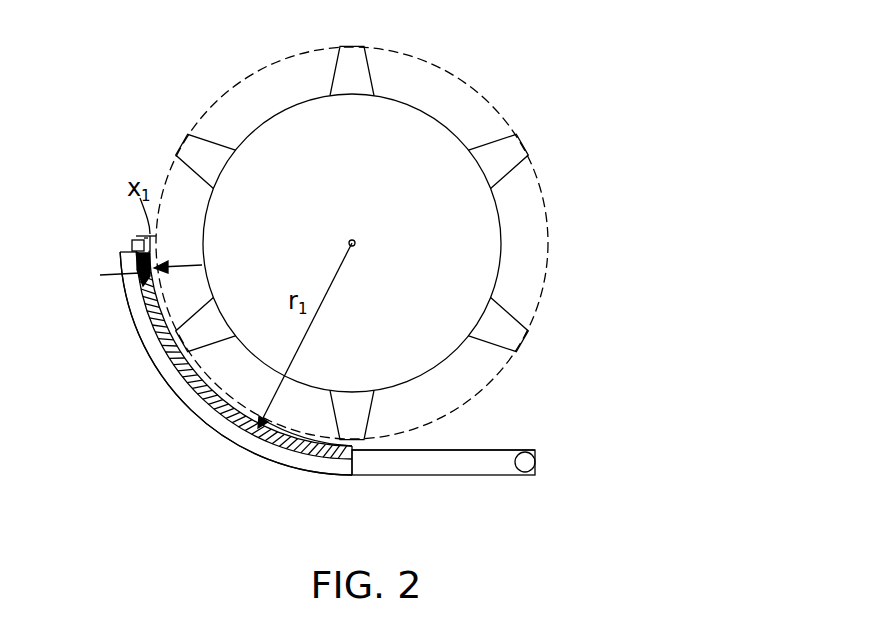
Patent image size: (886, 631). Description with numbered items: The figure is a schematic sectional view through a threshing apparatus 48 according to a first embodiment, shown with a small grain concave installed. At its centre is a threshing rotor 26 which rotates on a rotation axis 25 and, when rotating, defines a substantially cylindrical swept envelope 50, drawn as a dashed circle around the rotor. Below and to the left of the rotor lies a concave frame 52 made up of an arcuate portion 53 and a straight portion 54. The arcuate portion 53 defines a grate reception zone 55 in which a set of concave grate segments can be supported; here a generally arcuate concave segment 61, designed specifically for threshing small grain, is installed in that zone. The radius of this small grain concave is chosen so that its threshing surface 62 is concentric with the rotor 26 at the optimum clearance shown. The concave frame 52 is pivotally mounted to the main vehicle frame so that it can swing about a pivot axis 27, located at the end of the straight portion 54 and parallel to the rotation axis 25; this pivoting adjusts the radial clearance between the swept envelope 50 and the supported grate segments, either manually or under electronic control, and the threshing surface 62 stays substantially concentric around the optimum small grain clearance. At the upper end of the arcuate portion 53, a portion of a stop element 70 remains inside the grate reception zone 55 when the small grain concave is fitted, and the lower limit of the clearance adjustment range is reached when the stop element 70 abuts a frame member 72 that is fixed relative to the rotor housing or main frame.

The threshing apparatus 48 is at (157, 76).
The swept envelope 50 is at (502, 108).
The threshing rotor 26 is at (503, 218).
The rotation axis 25 is at (361, 240).
The stop element 70 is at (130, 241).
The frame member 72 is at (140, 237).
The grate reception zone 55 is at (170, 376).
The threshing surface 62 is at (212, 390).
The arcuate portion 53 is at (219, 372).
The concave segment 61 is at (282, 452).
The straight portion 54 is at (423, 466).
The concave frame 52 is at (470, 470).
The pivot axis 27 is at (528, 470).